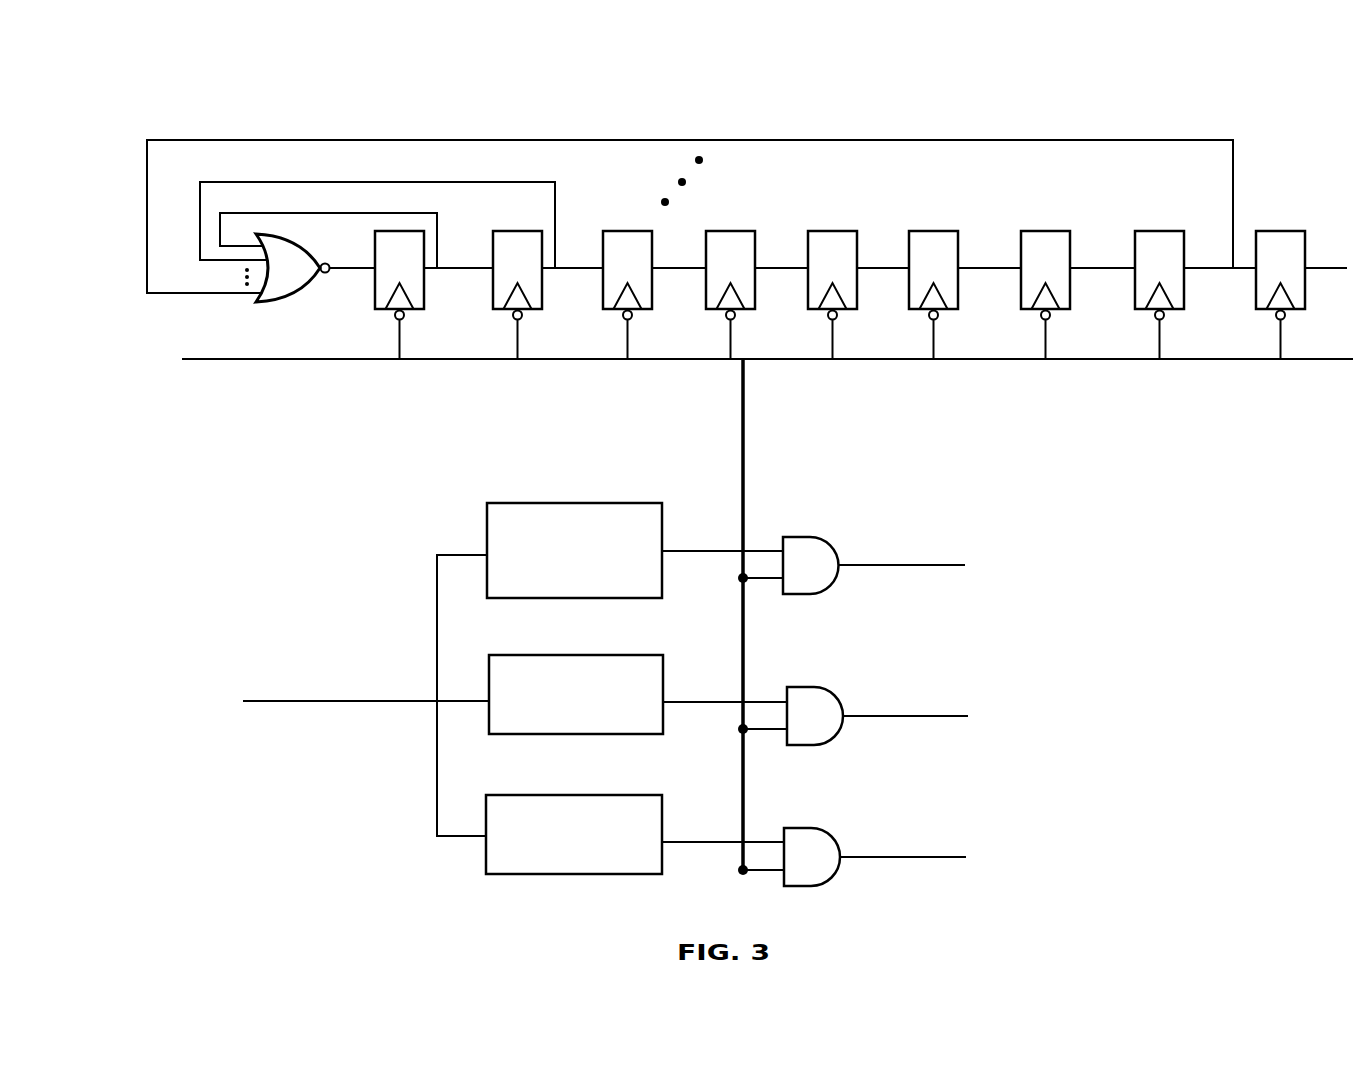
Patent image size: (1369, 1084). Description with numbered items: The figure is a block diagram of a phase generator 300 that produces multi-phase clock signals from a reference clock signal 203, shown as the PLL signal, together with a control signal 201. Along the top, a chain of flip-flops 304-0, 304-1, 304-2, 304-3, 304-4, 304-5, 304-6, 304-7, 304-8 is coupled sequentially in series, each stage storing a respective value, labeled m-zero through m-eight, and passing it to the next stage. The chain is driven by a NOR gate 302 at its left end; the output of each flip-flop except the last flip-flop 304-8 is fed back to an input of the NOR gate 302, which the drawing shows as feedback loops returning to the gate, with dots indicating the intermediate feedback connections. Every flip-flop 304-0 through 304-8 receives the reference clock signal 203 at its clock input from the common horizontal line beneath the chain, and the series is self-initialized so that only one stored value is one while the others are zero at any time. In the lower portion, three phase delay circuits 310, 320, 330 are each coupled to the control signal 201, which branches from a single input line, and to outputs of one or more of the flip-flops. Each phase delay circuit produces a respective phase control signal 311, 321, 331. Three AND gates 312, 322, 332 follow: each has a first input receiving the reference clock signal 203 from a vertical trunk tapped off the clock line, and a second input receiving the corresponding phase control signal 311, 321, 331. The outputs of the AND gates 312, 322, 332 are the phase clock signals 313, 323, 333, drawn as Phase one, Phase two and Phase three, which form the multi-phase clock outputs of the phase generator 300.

The phase generator 300 is at (117, 83).
The NOR gate 302 is at (284, 304).
The flip-flop 304-0 is at (380, 311).
The flip-flop 304-1 is at (498, 311).
The flip-flop 304-2 is at (608, 311).
The flip-flop 304-3 is at (711, 311).
The flip-flop 304-4 is at (813, 311).
The flip-flop 304-5 is at (914, 311).
The flip-flop 304-6 is at (1026, 311).
The flip-flop 304-7 is at (1140, 311).
The flip-flop 304-8 is at (1261, 311).
The reference clock signal 203 is at (726, 371).
The control signal 201 is at (363, 695).
The phase delay circuit 310 is at (574, 550).
The phase delay circuit 320 is at (576, 694).
The phase delay circuit 330 is at (574, 834).
The phase control signal 311 is at (722, 566).
The phase control signal 321 is at (725, 717).
The phase control signal 331 is at (723, 856).
The AND gate 312 is at (815, 537).
The AND gate 322 is at (819, 687).
The AND gate 332 is at (817, 828).
The phase clock signal 313 is at (1038, 547).
The phase clock signal 323 is at (1022, 692).
The phase clock signal 333 is at (1040, 841).